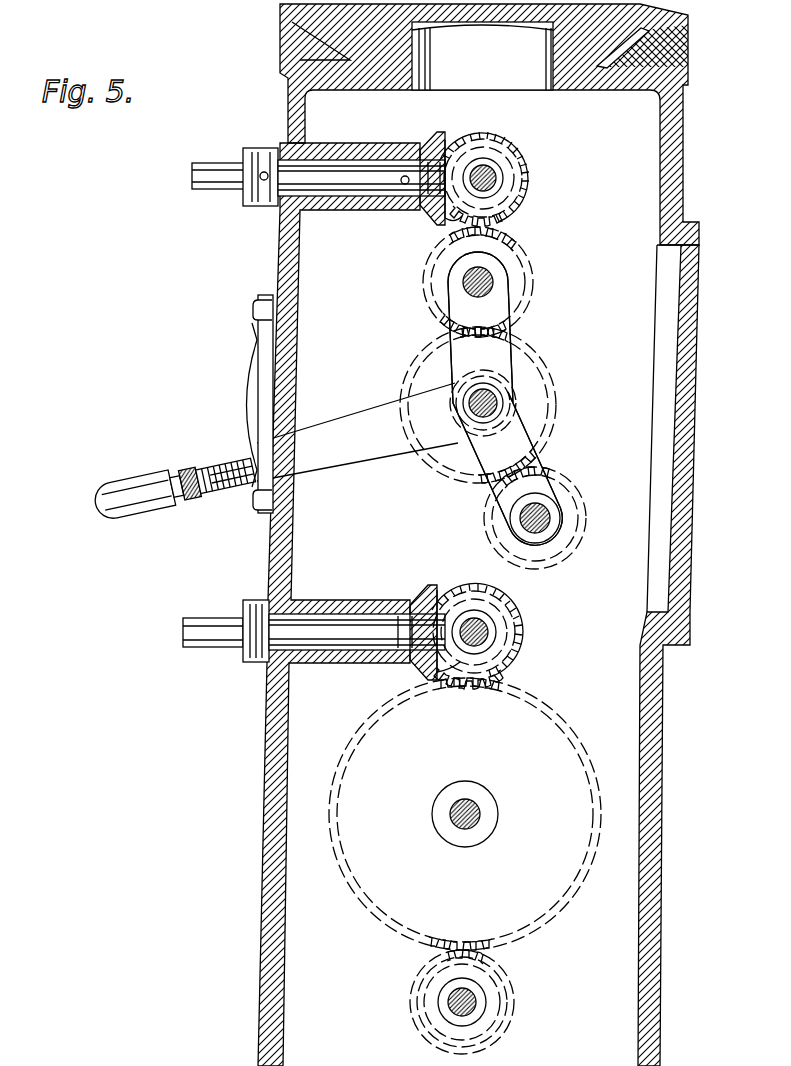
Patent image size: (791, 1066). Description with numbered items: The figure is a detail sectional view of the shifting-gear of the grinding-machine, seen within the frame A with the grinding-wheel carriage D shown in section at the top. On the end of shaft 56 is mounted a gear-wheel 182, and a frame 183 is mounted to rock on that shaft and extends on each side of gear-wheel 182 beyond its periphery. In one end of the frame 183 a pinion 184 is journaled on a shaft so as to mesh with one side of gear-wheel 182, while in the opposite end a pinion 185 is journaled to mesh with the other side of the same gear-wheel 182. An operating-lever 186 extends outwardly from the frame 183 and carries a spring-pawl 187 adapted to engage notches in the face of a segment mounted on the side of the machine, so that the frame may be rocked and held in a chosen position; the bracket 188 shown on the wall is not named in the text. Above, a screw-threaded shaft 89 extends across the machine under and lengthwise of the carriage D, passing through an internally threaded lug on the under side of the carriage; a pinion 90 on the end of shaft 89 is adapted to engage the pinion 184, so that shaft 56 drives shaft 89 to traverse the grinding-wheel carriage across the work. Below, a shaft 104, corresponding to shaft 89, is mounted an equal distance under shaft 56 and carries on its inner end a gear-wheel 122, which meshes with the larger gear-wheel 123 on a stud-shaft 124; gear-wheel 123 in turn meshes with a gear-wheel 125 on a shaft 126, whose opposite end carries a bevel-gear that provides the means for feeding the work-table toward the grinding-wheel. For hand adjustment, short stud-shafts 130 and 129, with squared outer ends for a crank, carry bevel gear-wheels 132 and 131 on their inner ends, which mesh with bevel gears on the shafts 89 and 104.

The frame A is at (665, 710).
The carriage D is at (678, 47).
The shaft 56 is at (483, 403).
The screw-threaded shaft 89 is at (492, 176).
The pinion 90 is at (533, 174).
The shaft 104 is at (482, 632).
The gear-wheel 122 is at (505, 672).
The gear-wheel 123 is at (465, 814).
The stud-shaft 124 is at (455, 810).
The gear-wheel 125 is at (486, 978).
The shaft 126 is at (460, 1003).
The stud-shaft 129 is at (293, 634).
The stud-shaft 130 is at (296, 170).
The bevel gear-wheel 131 is at (430, 592).
The bevel gear-wheel 132 is at (440, 135).
The gear-wheel 182 is at (538, 385).
The frame 183 is at (455, 355).
The pinion 184 is at (514, 268).
The pinion 185 is at (575, 503).
The operating-lever 186 is at (357, 432).
The spring-pawl 187 is at (219, 454).
The bracket 188 is at (247, 367).